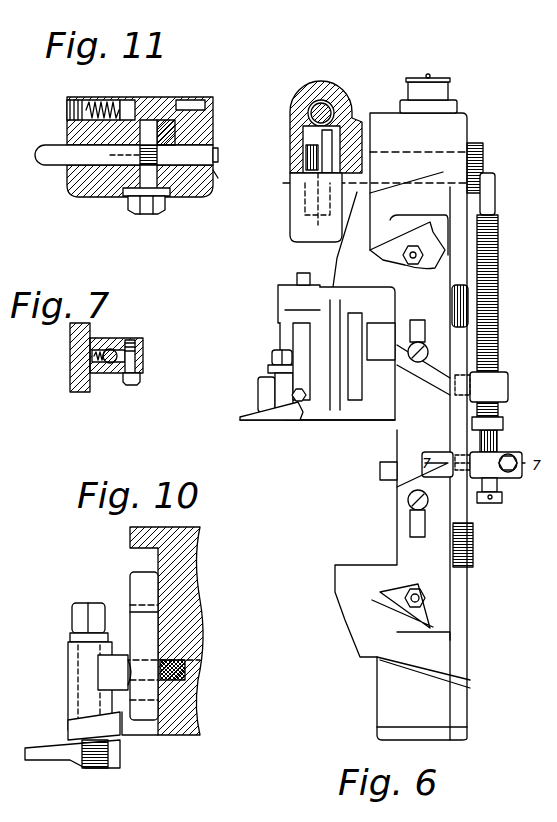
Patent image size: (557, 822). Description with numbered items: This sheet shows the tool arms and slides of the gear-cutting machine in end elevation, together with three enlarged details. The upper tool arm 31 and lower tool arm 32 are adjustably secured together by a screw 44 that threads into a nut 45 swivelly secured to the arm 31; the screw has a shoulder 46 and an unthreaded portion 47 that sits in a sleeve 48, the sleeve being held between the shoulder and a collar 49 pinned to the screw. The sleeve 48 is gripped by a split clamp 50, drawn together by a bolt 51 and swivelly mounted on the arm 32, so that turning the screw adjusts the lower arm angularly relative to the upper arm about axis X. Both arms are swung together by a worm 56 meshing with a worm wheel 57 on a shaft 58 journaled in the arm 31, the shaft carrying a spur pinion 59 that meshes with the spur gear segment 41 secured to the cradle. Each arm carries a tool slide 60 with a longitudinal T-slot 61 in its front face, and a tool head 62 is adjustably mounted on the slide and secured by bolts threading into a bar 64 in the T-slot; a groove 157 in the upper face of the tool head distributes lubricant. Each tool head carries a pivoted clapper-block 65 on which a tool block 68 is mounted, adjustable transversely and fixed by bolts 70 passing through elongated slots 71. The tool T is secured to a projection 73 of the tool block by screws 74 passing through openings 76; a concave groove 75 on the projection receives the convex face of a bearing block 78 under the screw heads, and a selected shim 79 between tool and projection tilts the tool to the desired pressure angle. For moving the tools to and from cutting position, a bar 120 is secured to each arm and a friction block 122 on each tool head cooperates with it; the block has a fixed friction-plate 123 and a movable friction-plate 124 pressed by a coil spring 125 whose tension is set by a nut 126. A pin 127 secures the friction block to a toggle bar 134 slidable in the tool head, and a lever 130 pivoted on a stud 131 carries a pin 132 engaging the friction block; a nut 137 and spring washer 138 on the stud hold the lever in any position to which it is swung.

In FIG. 6, the upper tool arm 31 is at (390, 128).
In FIG. 7, the lower tool arm 32 is at (75, 385).
In FIG. 6, the lower tool arm 32 is at (390, 697).
In FIG. 6, the spur gear segment 41 is at (490, 210).
In FIG. 6, the screw 44 is at (500, 298).
In FIG. 6, the nut 45 is at (505, 375).
In FIG. 6, the shoulder 46 is at (503, 425).
In FIG. 7, the unthreaded portion 47 is at (109, 365).
In FIG. 6, the unthreaded portion 47 is at (488, 442).
In FIG. 7, the sleeve 48 is at (112, 348).
In FIG. 6, the sleeve 48 is at (502, 497).
In FIG. 6, the collar 49 is at (495, 503).
In FIG. 7, the split clamp 50 is at (143, 345).
In FIG. 6, the split clamp 50 is at (507, 471).
In FIG. 7, the bolt 51 is at (135, 383).
In FIG. 6, the bolt 51 is at (508, 462).
In FIG. 6, the worm 56 is at (335, 88).
In FIG. 6, the worm wheel 57 is at (312, 202).
In FIG. 6, the shaft 58 is at (400, 158).
In FIG. 6, the spur pinion 59 is at (478, 148).
In FIG. 6, the tool slide 60 is at (403, 406).
In FIG. 6, the T-slot 61 is at (410, 517).
In FIG. 11, the tool head 62 is at (215, 178).
In FIG. 6, the tool head 62 is at (385, 297).
In FIG. 6, the bar 64 is at (418, 320).
In FIG. 10, the clapper-block 65 is at (190, 537).
In FIG. 10, the tool block 68 is at (140, 575).
In FIG. 10, the bolts 70 is at (150, 680).
In FIG. 10, the elongated slots 71 is at (140, 612).
In FIG. 10, the projection 73 is at (68, 688).
In FIG. 6, the projection 73 is at (290, 395).
In FIG. 10, the screws 74 is at (75, 617).
In FIG. 6, the screws 74 is at (270, 355).
In FIG. 10, the concave groove 75 is at (95, 668).
In FIG. 6, the concave groove 75 is at (299, 395).
In FIG. 10, the openings 76 is at (70, 708).
In FIG. 10, the bearing block 78 is at (70, 654).
In FIG. 6, the bearing block 78 is at (265, 370).
In FIG. 10, the shim 79 is at (70, 732).
In FIG. 6, the shim 79 is at (250, 417).
In FIG. 11, the bar 120 is at (160, 99).
In FIG. 11, the friction block 122 is at (215, 125).
In FIG. 11, the fixed friction-plate 123 is at (190, 100).
In FIG. 11, the movable friction-plate 124 is at (133, 97).
In FIG. 11, the coil spring 125 is at (112, 100).
In FIG. 11, the nut 126 is at (70, 100).
In FIG. 11, the pin 127 is at (220, 155).
In FIG. 11, the lever 130 is at (55, 160).
In FIG. 11, the stud 131 is at (120, 190).
In FIG. 11, the pin 132 is at (167, 145).
In FIG. 11, the toggle bar 134 is at (170, 150).
In FIG. 11, the nut 137 is at (140, 210).
In FIG. 11, the spring washer 138 is at (150, 218).
In FIG. 6, the groove 157 is at (345, 289).
In FIG. 10, the tool T is at (55, 760).
In FIG. 6, the tool T is at (270, 420).